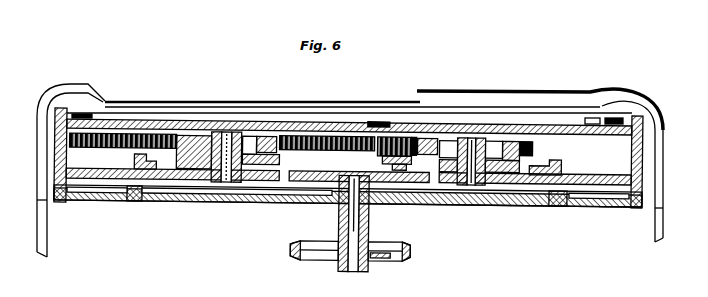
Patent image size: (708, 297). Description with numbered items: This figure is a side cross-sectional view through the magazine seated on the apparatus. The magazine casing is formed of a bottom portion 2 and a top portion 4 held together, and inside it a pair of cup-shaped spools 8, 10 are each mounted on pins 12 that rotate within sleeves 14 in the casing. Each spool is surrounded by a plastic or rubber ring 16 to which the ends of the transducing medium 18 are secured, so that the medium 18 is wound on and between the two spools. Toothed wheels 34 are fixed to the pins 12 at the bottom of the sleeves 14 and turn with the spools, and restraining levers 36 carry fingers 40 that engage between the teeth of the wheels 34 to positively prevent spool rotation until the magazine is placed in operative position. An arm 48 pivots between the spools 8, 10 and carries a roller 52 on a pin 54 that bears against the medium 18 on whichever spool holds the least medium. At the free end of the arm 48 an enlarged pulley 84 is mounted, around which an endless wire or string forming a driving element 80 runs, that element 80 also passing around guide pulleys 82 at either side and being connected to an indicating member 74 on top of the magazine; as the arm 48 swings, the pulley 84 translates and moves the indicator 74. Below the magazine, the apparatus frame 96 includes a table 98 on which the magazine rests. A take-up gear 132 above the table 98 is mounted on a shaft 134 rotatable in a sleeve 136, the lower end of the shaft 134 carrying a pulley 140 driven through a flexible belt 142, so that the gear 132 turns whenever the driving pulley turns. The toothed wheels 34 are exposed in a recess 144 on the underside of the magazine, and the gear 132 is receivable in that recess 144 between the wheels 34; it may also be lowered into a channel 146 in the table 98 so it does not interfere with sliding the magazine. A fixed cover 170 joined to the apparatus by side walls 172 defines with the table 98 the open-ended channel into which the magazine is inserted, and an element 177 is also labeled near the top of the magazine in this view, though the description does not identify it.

The bottom portion 2 is at (58, 159).
The top portion 4 is at (57, 118).
The cup-shaped spool 8 is at (458, 133).
The cup-shaped spool 10 is at (206, 126).
The pin 12 is at (233, 130).
The sleeve 14 is at (243, 132).
The plastic or rubber ring 16 is at (270, 142).
The transducing medium 18 is at (72, 147).
The toothed wheel 34 is at (257, 179).
The lever 36 is at (135, 161).
The finger 40 is at (171, 193).
The arm 48 is at (412, 177).
The roller 52 is at (384, 121).
The pin 54 is at (402, 130).
The indicating member 74 is at (590, 121).
The driving element 80 is at (121, 112).
The guide pulley 82 is at (80, 113).
The enlarged pulley 84 is at (372, 121).
The frame 96 is at (624, 213).
The table 98 is at (88, 202).
The gear 132 is at (301, 181).
The shaft 134 is at (368, 222).
The sleeve 136 is at (350, 218).
The pulley 140 is at (389, 256).
The flexible belt 142 is at (413, 251).
The recess 144 is at (162, 200).
The channel 146 is at (207, 188).
The fixed cover 170 is at (653, 106).
The side wall 172 is at (656, 161).
The top plate 177 is at (168, 101).